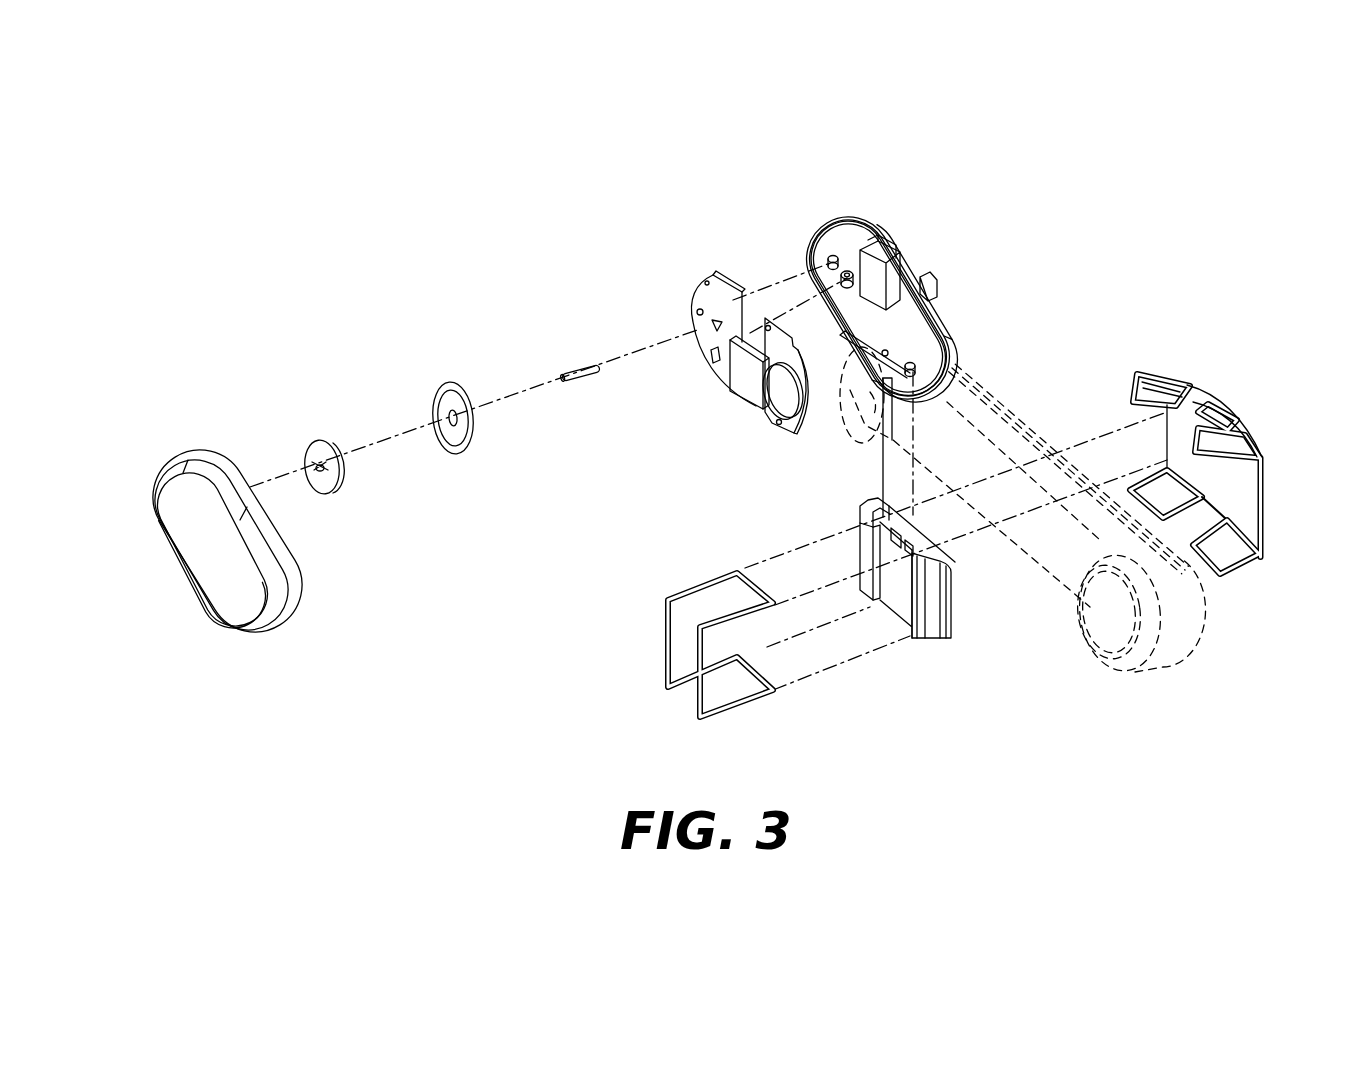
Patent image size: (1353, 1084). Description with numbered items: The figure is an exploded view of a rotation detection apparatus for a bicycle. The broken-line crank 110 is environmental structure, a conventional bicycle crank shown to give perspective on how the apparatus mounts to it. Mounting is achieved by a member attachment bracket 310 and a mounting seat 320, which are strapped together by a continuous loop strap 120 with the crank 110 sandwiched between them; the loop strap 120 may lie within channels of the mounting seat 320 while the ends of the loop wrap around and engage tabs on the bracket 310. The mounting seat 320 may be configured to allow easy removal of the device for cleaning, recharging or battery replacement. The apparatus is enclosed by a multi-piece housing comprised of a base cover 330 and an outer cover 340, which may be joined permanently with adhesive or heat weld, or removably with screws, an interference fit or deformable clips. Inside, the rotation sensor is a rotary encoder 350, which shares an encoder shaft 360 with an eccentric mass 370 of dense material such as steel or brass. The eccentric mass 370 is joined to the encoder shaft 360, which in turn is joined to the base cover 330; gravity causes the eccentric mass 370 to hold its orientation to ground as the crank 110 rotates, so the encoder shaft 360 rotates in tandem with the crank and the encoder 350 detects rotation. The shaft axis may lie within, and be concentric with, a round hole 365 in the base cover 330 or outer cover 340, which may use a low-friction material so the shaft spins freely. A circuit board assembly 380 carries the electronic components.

The crank 110 is at (990, 393).
The loop strap 120 is at (668, 625).
The member attachment bracket 310 is at (1197, 387).
The mounting seat 320 is at (945, 647).
The base cover 330 is at (858, 222).
The outer cover 340 is at (297, 613).
The rotary encoder 350 is at (462, 453).
The encoder shaft 360 is at (573, 383).
The round hole 365 is at (815, 233).
The eccentric mass 370 is at (318, 444).
The circuit board assembly 380 is at (790, 434).